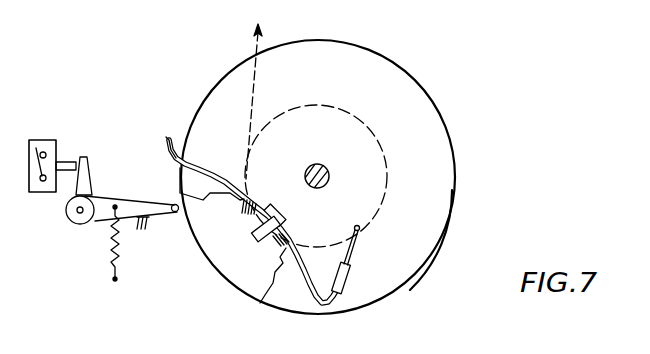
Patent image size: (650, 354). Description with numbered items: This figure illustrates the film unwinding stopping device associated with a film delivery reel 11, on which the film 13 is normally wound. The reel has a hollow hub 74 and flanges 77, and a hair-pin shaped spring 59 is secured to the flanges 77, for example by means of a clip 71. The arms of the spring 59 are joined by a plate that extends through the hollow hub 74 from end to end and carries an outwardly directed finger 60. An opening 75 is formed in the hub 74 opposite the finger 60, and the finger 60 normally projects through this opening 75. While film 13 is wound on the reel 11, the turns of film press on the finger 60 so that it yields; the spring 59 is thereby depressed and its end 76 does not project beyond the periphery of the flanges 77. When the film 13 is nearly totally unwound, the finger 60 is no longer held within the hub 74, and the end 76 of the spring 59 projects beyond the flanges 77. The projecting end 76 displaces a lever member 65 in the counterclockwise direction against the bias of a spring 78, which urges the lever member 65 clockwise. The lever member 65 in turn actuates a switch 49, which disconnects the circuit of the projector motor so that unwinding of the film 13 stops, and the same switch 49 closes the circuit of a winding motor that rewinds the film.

The film delivery reel 11 is at (448, 219).
The film 13 is at (261, 40).
The switch 49 is at (45, 140).
The spring 59 is at (207, 169).
The finger 60 is at (257, 240).
The lever member 65 is at (125, 197).
The clip 71 is at (349, 277).
The hub 74 is at (382, 150).
The opening 75 is at (253, 213).
The end of spring 76 is at (170, 142).
The flange 77 is at (448, 143).
The spring 78 is at (112, 238).